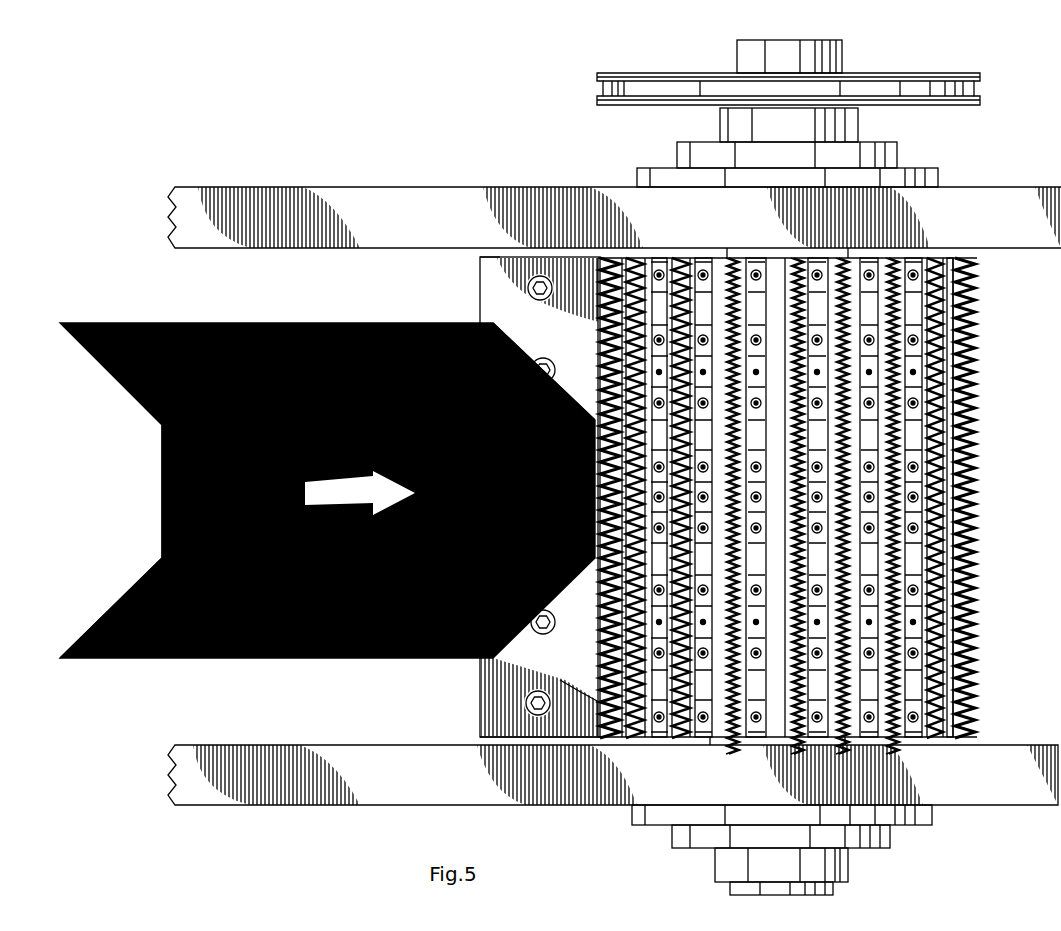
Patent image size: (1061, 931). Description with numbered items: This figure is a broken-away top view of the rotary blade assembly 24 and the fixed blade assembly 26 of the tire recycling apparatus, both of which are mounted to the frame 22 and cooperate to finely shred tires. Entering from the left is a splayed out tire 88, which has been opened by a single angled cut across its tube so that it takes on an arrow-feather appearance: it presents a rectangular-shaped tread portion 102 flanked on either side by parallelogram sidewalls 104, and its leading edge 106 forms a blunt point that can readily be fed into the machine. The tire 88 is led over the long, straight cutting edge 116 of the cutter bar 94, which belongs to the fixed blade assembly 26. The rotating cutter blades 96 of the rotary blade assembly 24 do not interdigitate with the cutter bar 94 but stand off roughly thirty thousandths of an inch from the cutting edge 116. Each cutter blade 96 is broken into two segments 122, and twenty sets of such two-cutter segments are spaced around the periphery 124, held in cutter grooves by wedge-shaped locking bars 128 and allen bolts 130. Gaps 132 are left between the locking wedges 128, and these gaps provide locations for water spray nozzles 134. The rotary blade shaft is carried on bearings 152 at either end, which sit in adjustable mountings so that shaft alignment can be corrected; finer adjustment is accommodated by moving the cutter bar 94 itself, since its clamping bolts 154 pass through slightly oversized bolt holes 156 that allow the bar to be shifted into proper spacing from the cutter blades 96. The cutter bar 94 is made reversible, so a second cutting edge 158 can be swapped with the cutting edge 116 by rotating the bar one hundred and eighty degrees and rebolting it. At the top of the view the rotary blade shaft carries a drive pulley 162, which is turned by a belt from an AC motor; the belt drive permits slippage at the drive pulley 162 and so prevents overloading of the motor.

The frame 22 is at (398, 224).
The rotary blade assembly 24 is at (940, 254).
The fixed blade assembly 26 is at (480, 307).
The splayed out tire 88 is at (128, 588).
The cutter bar 94 is at (515, 674).
The cutter blades 96 is at (710, 745).
The tread portion 102 is at (162, 472).
The sidewalls 104 is at (316, 396).
The leading edge 106 is at (515, 347).
The cutting edge 116 is at (600, 385).
The segments 122 is at (967, 403).
The periphery 124 is at (963, 678).
The locking bars 128 is at (880, 312).
The allen bolts 130 is at (890, 530).
The gaps 132 is at (868, 386).
The water spray nozzles 134 is at (968, 490).
The bearings 152 is at (938, 172).
The clamping bolts 154 is at (553, 694).
The bolt holes 156 is at (525, 703).
The second cutting edge 158 is at (480, 277).
The drive pulley 162 is at (597, 97).